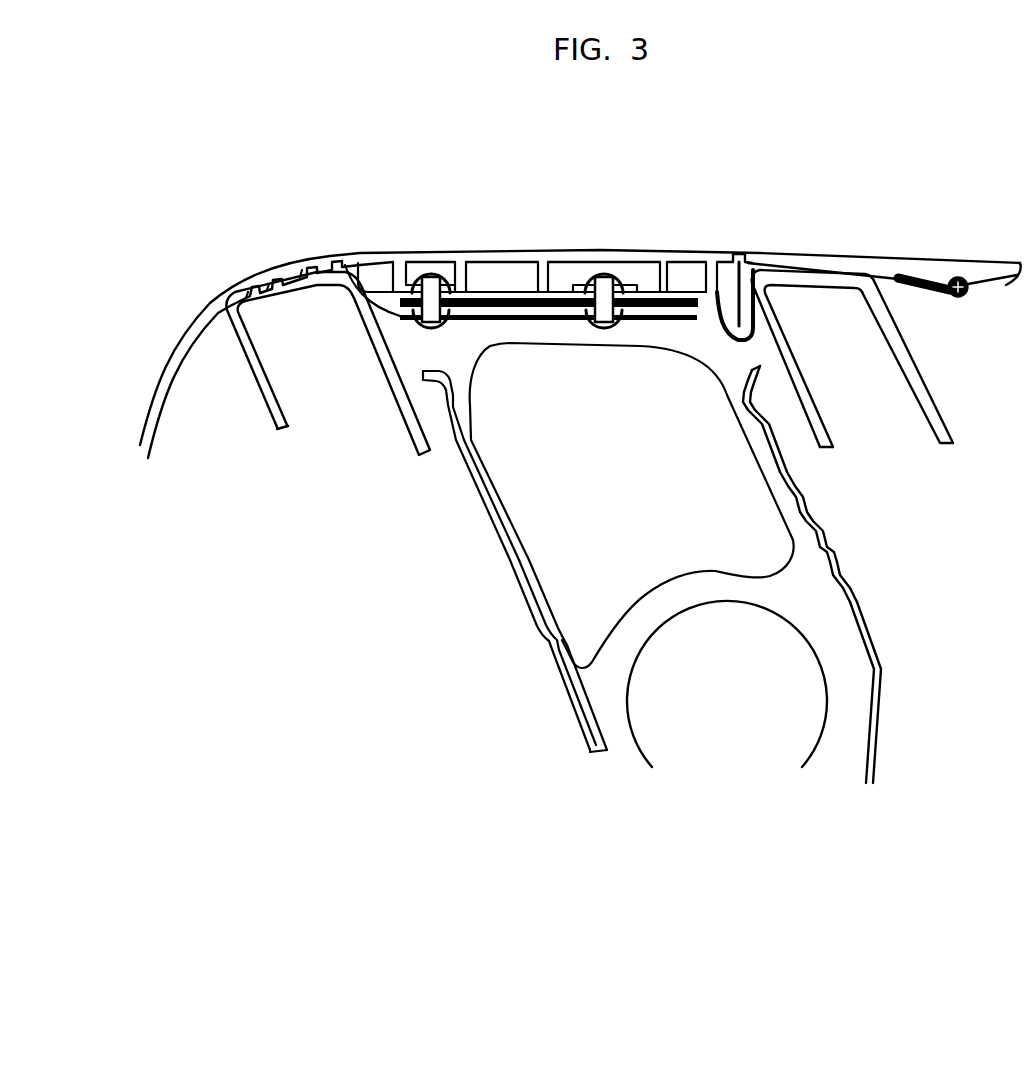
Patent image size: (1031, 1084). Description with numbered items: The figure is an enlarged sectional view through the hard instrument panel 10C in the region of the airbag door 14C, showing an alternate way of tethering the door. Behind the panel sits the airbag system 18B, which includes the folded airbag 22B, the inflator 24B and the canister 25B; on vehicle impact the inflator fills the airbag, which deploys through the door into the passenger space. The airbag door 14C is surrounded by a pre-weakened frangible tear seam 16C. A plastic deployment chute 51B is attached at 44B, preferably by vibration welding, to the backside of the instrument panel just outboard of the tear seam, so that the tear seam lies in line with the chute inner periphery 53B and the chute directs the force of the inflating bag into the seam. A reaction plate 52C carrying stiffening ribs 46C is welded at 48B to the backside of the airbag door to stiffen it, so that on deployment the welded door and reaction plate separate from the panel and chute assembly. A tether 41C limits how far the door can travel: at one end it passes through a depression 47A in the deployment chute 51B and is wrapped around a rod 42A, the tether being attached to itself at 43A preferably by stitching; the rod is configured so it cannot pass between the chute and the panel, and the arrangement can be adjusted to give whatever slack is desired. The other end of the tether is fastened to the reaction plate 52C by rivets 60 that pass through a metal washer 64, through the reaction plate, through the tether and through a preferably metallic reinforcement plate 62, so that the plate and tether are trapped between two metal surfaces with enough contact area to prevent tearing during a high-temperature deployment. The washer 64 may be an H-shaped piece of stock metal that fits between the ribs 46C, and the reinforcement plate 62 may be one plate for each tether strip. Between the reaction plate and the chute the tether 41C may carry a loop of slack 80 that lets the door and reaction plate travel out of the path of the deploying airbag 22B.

The instrument panel 10C is at (134, 391).
The airbag door 14C is at (440, 270).
The tear seam 16C is at (335, 243).
The airbag system 18B is at (908, 748).
The airbag 22B is at (800, 554).
The inflator 24B is at (808, 752).
The canister 25B is at (882, 688).
The tether 41C is at (553, 320).
The rod 42A is at (964, 292).
The tether stitching 43A is at (922, 278).
The chute weld attachment 44B is at (248, 285).
The stiffening ribs 46C is at (662, 266).
The depression 47A is at (882, 426).
The reaction plate weld 48B is at (542, 262).
The deployment chute 51B is at (604, 362).
The reaction plate 52C is at (700, 292).
The chute inner periphery 53B is at (388, 319).
The rivets 60 is at (450, 276).
The reinforcement plate 62 is at (488, 320).
The metal washer 64 is at (400, 266).
The loop of slack 80 is at (722, 340).